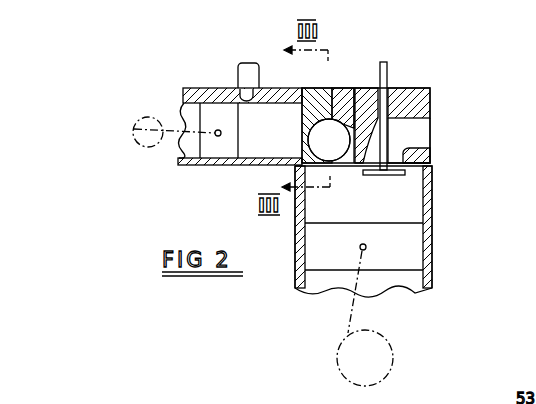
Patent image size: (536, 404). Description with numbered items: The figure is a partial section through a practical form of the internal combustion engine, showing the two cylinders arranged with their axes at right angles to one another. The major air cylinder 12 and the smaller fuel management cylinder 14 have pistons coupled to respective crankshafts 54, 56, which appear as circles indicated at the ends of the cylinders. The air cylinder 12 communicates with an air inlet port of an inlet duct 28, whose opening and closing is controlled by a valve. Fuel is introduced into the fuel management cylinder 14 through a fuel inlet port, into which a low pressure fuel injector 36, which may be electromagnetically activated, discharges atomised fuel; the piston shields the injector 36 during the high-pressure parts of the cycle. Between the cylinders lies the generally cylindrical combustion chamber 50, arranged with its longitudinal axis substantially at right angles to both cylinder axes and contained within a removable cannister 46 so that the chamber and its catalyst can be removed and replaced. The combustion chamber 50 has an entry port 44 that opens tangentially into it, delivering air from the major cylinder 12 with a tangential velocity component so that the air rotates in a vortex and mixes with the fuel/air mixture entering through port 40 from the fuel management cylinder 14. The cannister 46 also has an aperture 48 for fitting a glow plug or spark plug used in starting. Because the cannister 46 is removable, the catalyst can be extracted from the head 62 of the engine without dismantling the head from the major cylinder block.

The air cylinder 12 is at (415, 208).
The fuel management cylinder 14 is at (255, 145).
The inlet duct 28 is at (420, 140).
The low pressure fuel injector 36 is at (242, 71).
The port 40 is at (308, 137).
The entry port 44 is at (345, 160).
The removable cannister 46 is at (342, 97).
The aperture 48 is at (329, 98).
The combustion chamber 50 is at (332, 155).
The crankshaft 54 is at (370, 332).
The crankshaft 56 is at (142, 118).
The head 62 is at (415, 92).